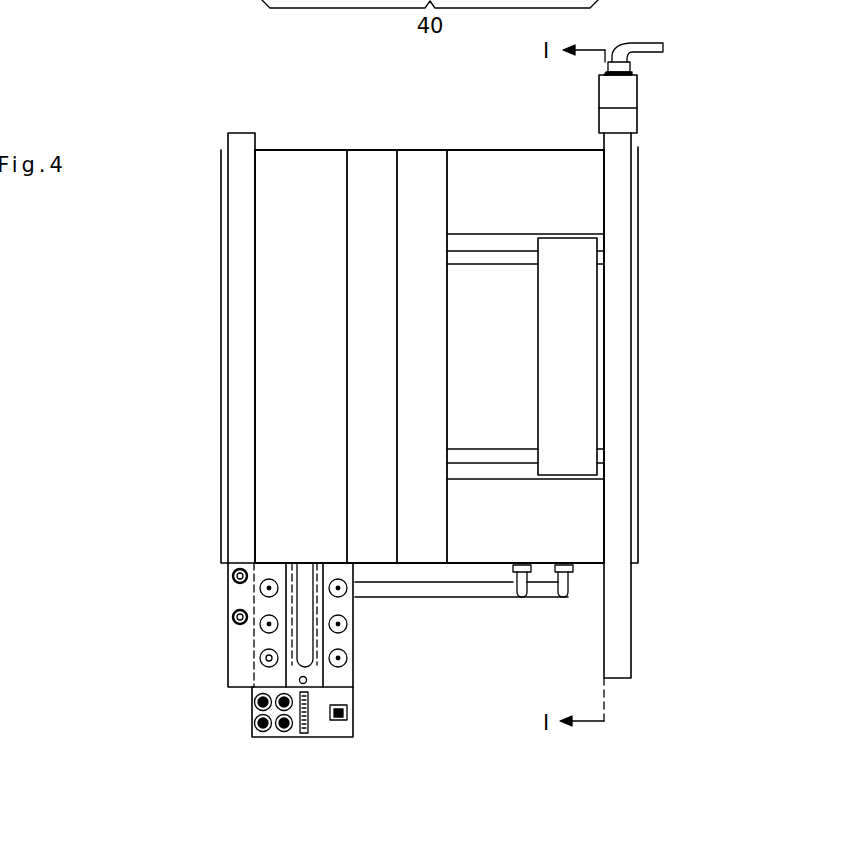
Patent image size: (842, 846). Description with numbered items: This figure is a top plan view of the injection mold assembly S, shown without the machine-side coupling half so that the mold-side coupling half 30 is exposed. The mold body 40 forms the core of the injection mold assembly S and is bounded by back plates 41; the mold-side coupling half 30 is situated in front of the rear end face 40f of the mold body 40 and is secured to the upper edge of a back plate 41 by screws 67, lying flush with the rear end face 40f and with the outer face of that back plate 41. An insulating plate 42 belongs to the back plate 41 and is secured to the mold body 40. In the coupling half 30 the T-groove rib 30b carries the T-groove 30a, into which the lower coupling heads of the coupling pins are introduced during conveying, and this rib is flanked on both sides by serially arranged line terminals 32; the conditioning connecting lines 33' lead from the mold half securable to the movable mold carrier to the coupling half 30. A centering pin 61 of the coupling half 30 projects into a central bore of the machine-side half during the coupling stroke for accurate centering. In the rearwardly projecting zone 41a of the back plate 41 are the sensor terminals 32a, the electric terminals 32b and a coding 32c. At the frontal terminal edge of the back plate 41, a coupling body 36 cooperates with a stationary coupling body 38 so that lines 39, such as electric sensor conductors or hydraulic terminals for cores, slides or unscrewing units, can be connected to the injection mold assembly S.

The mold body 40 is at (260, 143).
The rear end face of the mold body 40f is at (420, 565).
The back plate 41 is at (240, 292).
The rearwardly projecting zone of the back plate 41a is at (238, 637).
The insulating plate 42 is at (222, 258).
The coupling body 36 is at (625, 92).
The stationary coupling body 38 is at (620, 125).
The lines 39 is at (643, 48).
The conditioning connecting lines 33' is at (526, 555).
The mold-side coupling half 30 is at (357, 637).
The T-groove 30a is at (305, 640).
The T-groove rib 30b is at (318, 605).
The line terminals 32 is at (267, 623).
The sensor terminals 32a is at (260, 722).
The electric terminals 32b is at (345, 711).
The coding 32c is at (310, 706).
The centering pin 61 is at (300, 683).
The screws 67 is at (235, 573).
The injection mold assembly S is at (221, 421).